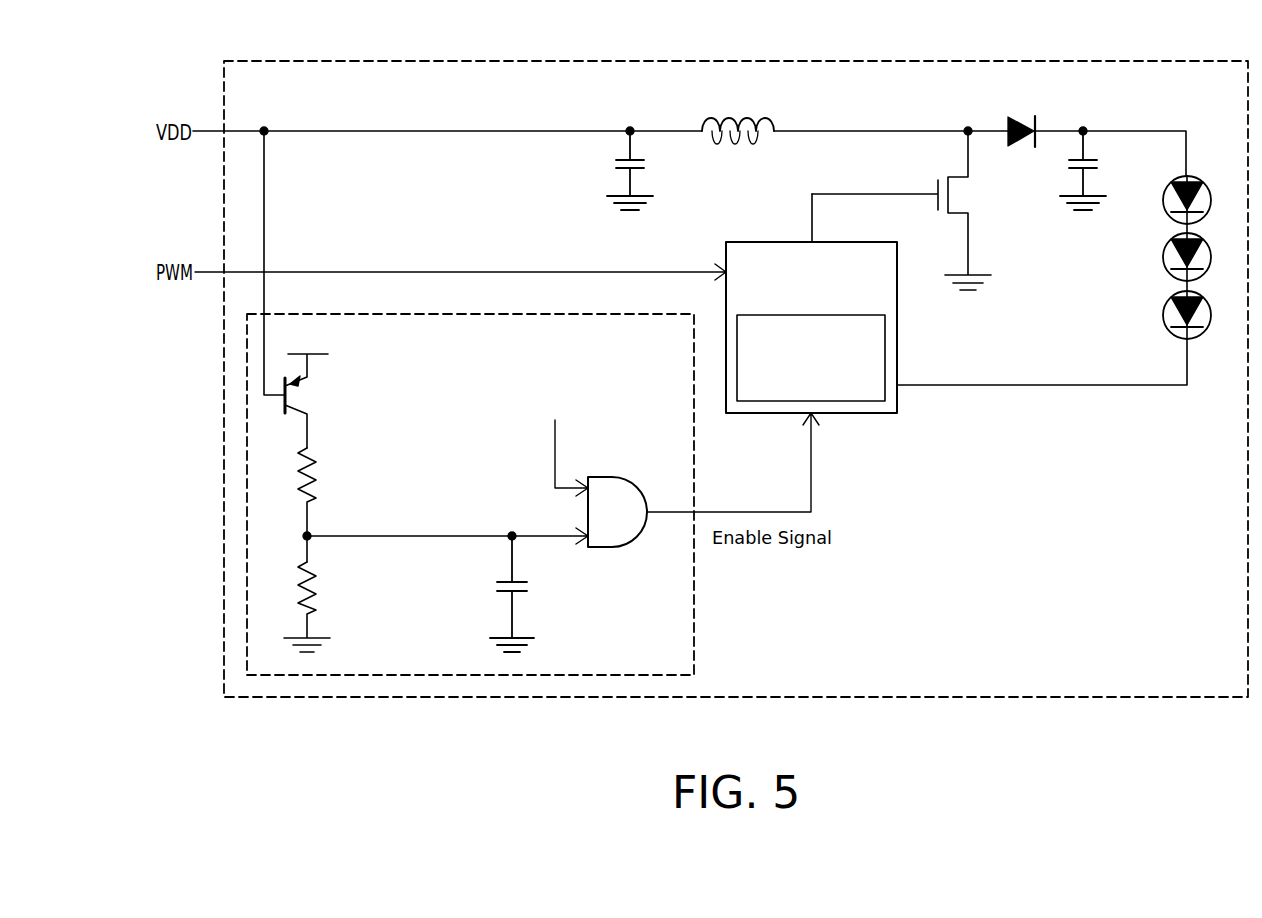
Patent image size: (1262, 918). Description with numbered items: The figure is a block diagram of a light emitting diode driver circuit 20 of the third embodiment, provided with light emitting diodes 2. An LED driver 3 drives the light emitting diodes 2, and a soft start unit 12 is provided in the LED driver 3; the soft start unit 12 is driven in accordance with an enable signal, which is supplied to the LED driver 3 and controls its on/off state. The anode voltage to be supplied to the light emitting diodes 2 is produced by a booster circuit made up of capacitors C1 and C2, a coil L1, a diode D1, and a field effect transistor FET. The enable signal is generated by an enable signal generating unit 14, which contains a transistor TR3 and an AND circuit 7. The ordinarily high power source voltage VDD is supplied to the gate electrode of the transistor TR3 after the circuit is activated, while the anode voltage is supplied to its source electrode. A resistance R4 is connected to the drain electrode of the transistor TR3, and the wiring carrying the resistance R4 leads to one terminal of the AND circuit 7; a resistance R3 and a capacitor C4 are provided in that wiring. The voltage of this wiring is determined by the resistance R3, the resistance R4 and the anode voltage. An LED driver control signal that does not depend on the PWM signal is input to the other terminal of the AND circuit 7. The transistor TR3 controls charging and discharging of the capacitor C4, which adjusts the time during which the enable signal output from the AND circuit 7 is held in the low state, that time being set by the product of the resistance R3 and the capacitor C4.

The light emitting diode driver circuit 20 is at (1211, 61).
The light emitting diodes 2 is at (1207, 178).
The LED driver 3 is at (873, 242).
The soft start unit 12 is at (850, 315).
The enable signal generating unit 14 is at (659, 314).
The AND circuit 7 is at (647, 465).
The coil L1 is at (737, 118).
The capacitor C1 is at (647, 166).
The capacitor C2 is at (1100, 166).
The capacitor C4 is at (530, 588).
The diode D1 is at (1020, 117).
The field effect transistor FET is at (960, 194).
The transistor TR3 is at (311, 397).
The resistance R3 is at (318, 585).
The resistance R4 is at (318, 470).